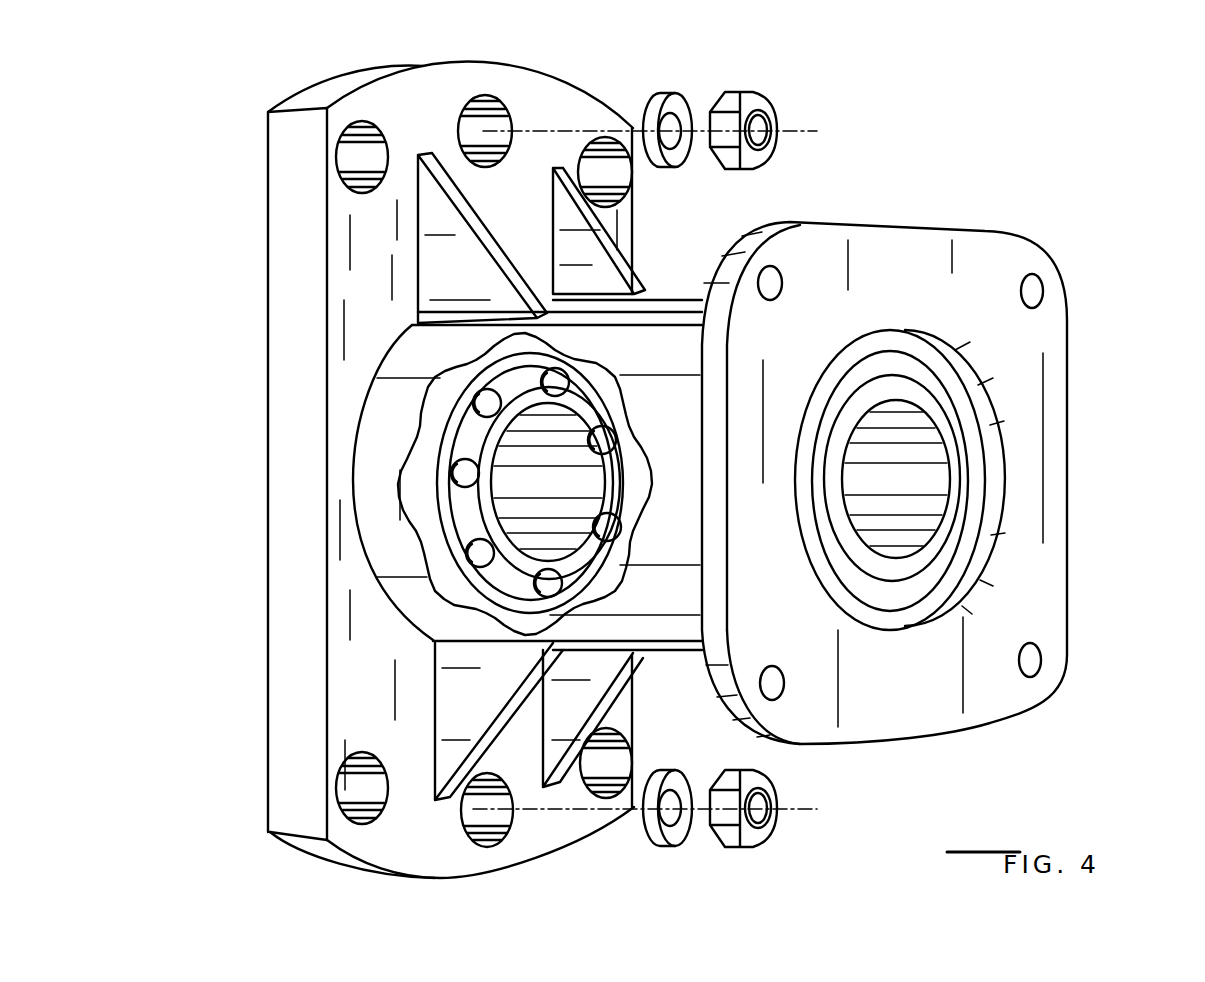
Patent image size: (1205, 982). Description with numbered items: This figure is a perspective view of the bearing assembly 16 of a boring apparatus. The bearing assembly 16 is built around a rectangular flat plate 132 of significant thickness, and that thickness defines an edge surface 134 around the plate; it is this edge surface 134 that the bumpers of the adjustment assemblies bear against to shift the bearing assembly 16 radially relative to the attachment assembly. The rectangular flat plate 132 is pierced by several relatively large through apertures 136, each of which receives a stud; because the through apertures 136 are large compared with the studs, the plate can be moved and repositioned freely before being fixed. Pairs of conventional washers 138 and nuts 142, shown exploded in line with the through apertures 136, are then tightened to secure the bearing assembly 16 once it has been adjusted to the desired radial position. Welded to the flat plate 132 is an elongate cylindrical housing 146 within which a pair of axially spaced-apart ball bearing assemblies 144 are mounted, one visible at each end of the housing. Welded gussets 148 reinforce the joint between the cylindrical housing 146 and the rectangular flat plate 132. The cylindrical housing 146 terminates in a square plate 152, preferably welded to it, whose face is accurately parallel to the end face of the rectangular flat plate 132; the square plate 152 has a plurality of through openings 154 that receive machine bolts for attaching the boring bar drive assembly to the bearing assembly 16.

The bearing assembly 16 is at (972, 130).
The rectangular flat plate 132 is at (382, 98).
The edge surface 134 is at (278, 482).
The through apertures 136 is at (493, 123).
The washers 138 is at (667, 95).
The nuts 142 is at (760, 165).
The ball bearing assemblies 144 is at (433, 453).
The cylindrical housing 146 is at (657, 475).
The gussets 148 is at (433, 197).
The square plate 152 is at (1040, 335).
The through openings 154 is at (1036, 289).